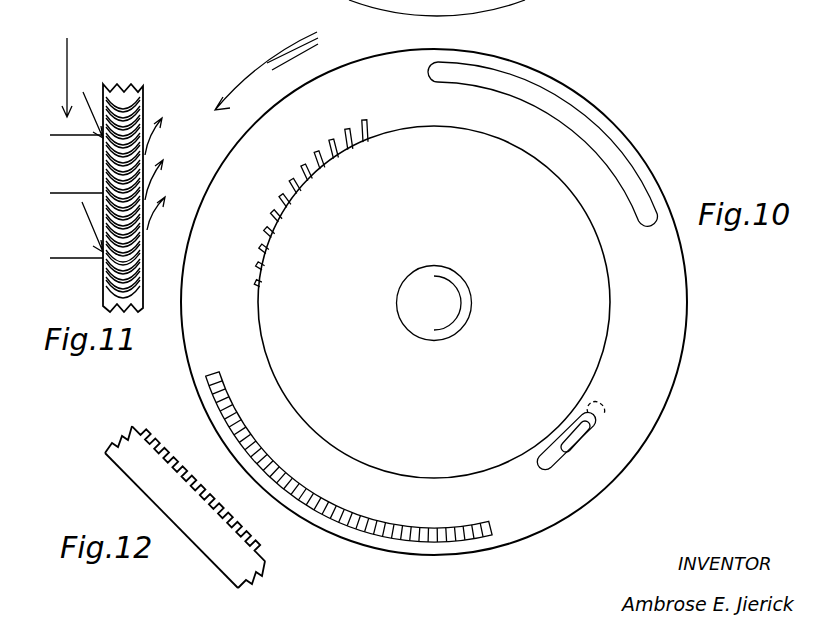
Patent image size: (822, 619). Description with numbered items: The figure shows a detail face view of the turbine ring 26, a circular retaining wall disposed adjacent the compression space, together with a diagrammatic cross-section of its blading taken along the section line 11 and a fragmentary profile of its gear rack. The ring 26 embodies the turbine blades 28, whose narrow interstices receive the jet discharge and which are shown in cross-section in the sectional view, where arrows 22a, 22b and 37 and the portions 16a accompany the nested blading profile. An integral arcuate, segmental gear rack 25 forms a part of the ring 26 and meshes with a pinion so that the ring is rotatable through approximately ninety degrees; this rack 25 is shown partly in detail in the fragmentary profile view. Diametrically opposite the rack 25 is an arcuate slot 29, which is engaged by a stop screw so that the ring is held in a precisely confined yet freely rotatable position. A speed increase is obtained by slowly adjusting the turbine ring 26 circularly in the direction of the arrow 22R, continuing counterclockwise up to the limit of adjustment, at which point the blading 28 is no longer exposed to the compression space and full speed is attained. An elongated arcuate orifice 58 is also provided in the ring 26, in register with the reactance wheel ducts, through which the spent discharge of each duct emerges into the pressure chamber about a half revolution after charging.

In FIG. 10, the turbine blades 28 is at (362, 116).
In FIG. 11, the turbine blades 28 is at (138, 86).
In FIG. 10, the turbine ring 26 is at (362, 464).
In FIG. 10, the section line 11— 11 is at (268, 305).
In FIG. 10, the arcuate slot 29 is at (620, 142).
In FIG. 10, the segmental gear rack 25 is at (344, 529).
In FIG. 10, the elongated arcuate orifice 58 is at (566, 438).
In FIG. 10, the arrow 22R is at (252, 72).
In FIG. 11, the coil spring strip section 22a is at (67, 62).
In FIG. 11, the spring strip portion 16a is at (86, 193).
In FIG. 11, the spring strip portion 22b is at (90, 232).
In FIG. 11, the direction of spring movement 37 is at (150, 152).